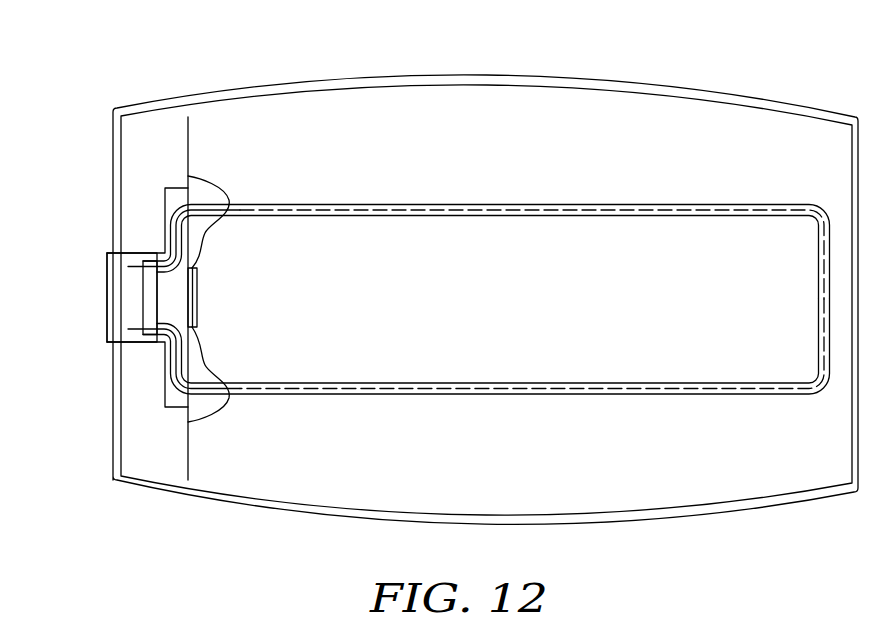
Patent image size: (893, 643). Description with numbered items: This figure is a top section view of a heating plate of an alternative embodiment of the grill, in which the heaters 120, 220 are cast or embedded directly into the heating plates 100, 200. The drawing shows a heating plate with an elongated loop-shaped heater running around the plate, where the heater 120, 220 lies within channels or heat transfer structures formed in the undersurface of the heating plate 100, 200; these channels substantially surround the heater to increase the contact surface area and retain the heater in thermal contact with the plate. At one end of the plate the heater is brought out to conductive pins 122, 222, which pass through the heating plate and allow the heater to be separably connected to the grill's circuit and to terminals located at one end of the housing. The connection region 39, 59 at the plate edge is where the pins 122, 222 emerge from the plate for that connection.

The heating plate 100 is at (485, 271).
The heating plate 200 is at (707, 96).
The connector bracket 39 is at (128, 292).
The connector bracket 59 is at (134, 253).
The heater 120 is at (377, 205).
The heater 220 is at (350, 393).
The conductive pin 122 is at (127, 268).
The conductive pin 222 is at (130, 330).